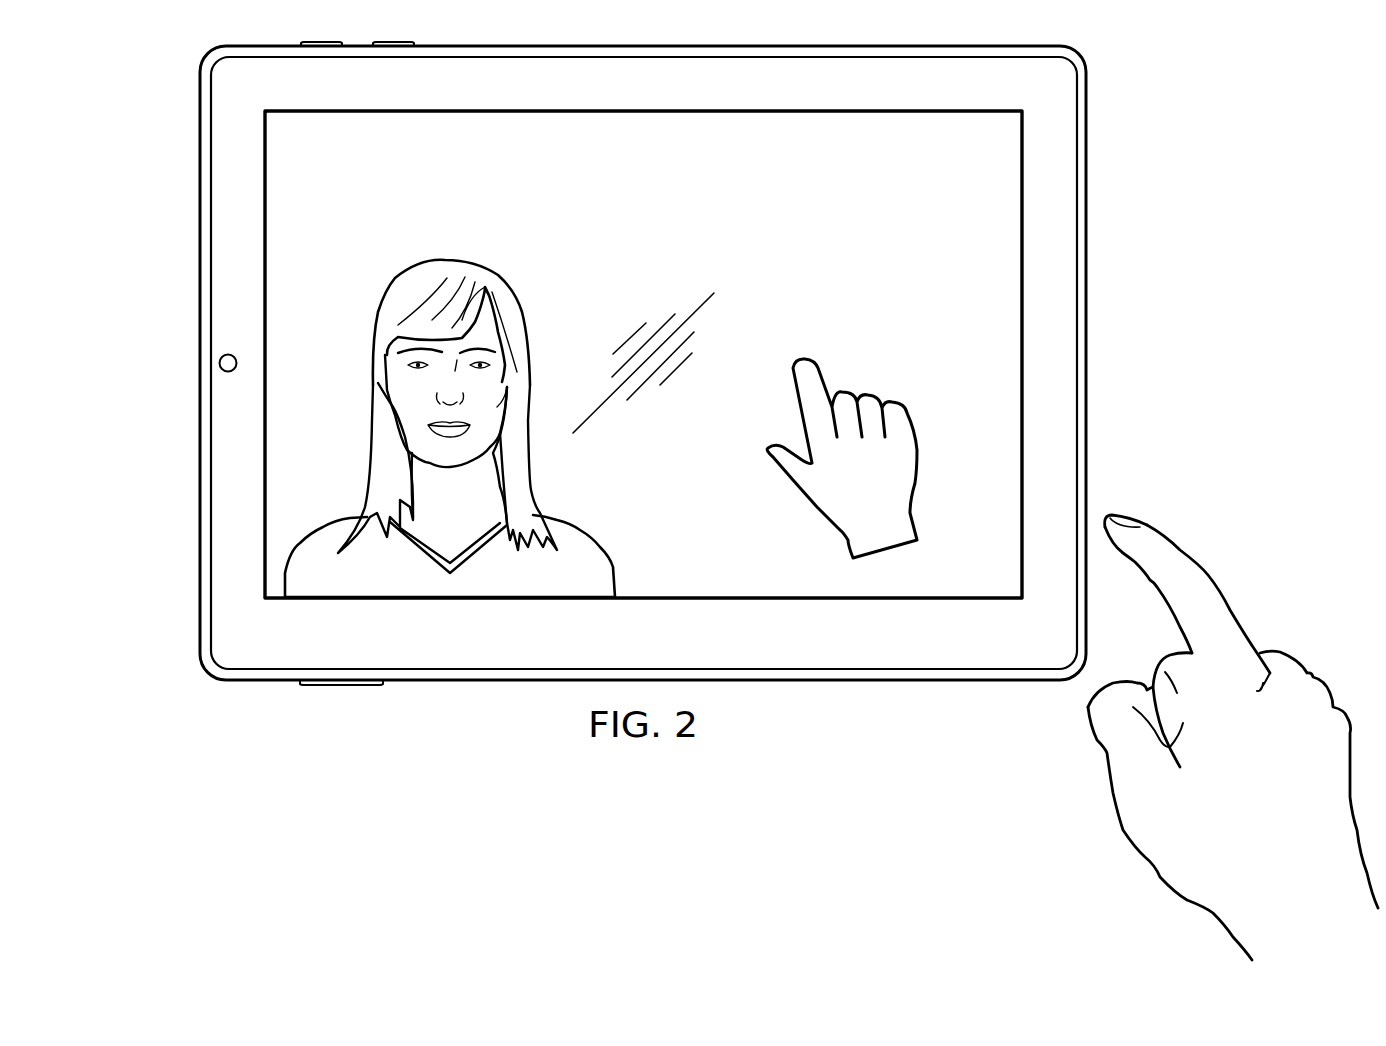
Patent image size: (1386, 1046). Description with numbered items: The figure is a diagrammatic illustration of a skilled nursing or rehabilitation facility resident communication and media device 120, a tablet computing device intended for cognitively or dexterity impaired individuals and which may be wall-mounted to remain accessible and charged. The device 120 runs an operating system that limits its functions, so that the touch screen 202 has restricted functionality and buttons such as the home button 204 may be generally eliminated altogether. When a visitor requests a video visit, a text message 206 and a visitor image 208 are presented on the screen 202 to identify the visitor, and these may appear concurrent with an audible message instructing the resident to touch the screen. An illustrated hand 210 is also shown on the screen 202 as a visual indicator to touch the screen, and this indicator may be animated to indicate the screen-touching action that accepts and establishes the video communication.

The personal cognitive and/or dexterity impaired individual communication and/or med 120 is at (200, 172).
The touch screen 202 is at (1022, 202).
The home button 204 is at (219, 364).
The text message 206 is at (755, 200).
The visitor image 208 is at (380, 312).
The illustrated hand 210 is at (937, 415).